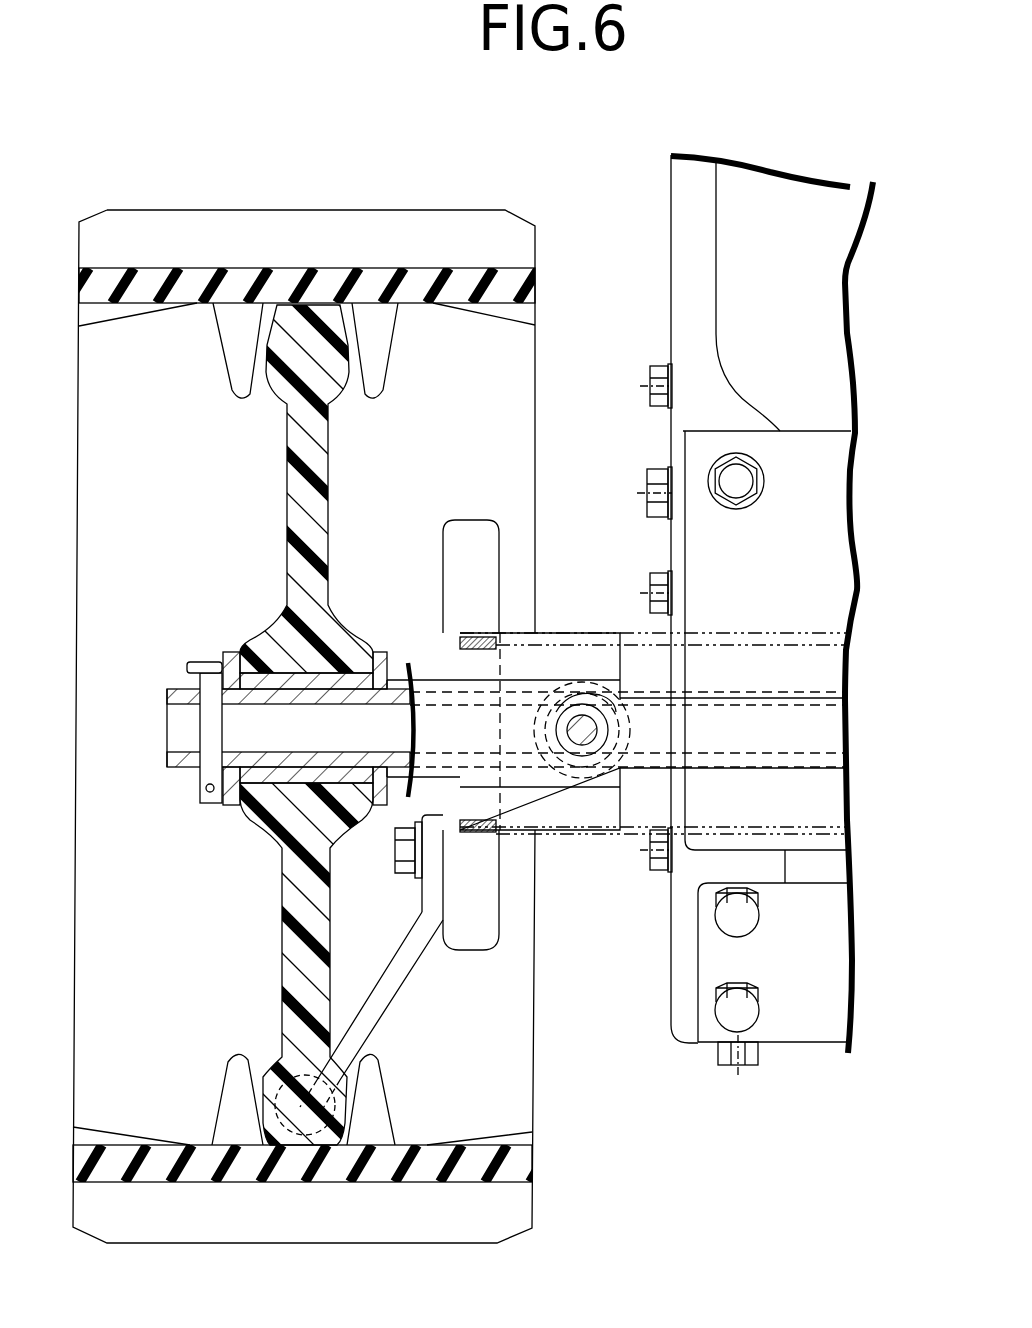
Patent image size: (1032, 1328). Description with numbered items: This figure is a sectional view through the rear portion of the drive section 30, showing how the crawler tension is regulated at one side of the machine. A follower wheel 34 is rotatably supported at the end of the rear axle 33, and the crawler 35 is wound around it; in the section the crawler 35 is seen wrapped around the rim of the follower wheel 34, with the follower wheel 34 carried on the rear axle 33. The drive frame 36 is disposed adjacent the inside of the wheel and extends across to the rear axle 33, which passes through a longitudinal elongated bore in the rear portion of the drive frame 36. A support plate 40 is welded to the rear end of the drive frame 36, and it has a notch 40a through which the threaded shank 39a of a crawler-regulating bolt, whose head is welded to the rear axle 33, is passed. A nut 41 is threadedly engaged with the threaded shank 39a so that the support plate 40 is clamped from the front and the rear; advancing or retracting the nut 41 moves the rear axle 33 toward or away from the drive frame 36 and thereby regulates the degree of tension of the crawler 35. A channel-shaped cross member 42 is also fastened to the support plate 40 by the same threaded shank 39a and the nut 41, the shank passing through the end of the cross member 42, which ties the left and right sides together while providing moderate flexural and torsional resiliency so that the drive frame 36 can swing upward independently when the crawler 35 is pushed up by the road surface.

The drive section 30 is at (382, 200).
The rear axle 33 is at (832, 740).
The follower wheel 34 is at (330, 478).
The crawler 35 is at (285, 242).
The drive frame 36 is at (462, 540).
The threaded shank 39a is at (580, 737).
The support plate 40 is at (542, 650).
The notch 40a is at (592, 706).
The nut 41 is at (610, 732).
The cross member 42 is at (760, 633).